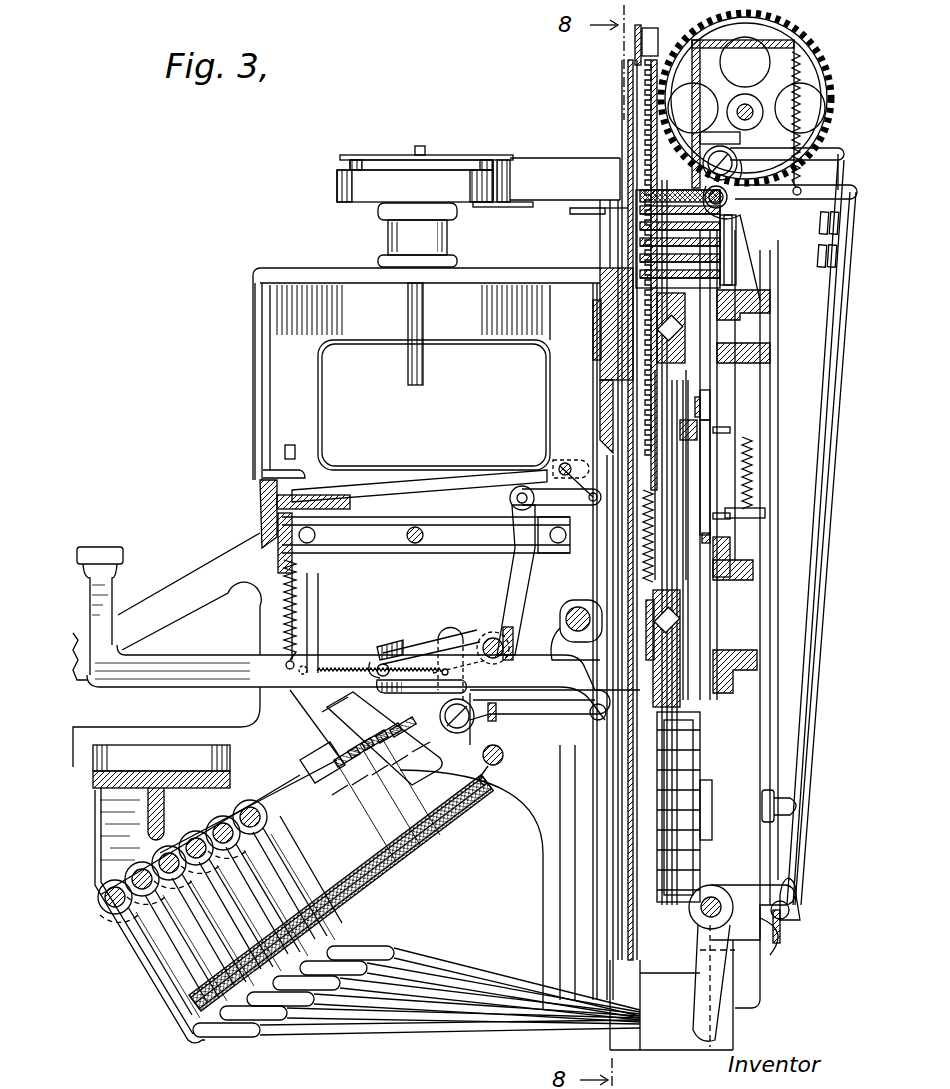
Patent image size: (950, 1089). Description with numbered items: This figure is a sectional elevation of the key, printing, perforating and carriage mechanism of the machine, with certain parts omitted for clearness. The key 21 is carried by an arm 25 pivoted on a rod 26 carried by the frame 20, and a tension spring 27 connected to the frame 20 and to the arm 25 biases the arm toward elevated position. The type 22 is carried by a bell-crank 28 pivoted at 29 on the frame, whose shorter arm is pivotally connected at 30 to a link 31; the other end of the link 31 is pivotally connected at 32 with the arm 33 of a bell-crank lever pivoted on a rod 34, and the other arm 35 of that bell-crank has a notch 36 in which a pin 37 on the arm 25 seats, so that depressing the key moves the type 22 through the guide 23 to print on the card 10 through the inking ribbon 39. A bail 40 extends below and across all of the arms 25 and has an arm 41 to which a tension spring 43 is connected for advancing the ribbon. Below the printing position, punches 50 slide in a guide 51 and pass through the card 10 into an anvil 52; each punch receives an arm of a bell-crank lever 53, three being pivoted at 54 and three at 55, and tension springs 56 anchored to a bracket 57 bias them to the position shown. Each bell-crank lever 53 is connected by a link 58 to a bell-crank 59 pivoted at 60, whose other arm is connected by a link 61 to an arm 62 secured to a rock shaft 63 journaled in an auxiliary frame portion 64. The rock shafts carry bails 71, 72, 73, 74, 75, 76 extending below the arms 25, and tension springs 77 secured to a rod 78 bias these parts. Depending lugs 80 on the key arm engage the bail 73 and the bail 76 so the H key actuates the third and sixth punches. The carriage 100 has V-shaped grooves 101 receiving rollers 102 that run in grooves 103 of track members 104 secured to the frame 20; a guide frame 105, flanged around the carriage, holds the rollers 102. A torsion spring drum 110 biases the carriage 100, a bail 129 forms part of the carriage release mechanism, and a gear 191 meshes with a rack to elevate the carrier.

The card 10 is at (632, 150).
The frame 20 is at (260, 368).
The key 21 is at (100, 552).
The type 22 is at (298, 452).
The guide 23 is at (568, 210).
The arm 25 is at (205, 660).
The rod 26 is at (578, 607).
The tension spring 27 is at (296, 652).
The bell-crank 28 is at (420, 480).
The pivot 29 is at (560, 464).
The pivotal connection 30 is at (592, 503).
The link 31 is at (532, 492).
The pivotal connection 32 is at (512, 497).
The arm 33 is at (512, 600).
The rod 34 is at (488, 638).
The arm 35 is at (418, 650).
The notch 36 is at (385, 664).
The pin 37 is at (378, 664).
The inking ribbon 39 is at (532, 162).
The bail 40 is at (498, 738).
The arm 41 is at (445, 630).
The tension spring 43 is at (312, 664).
The punch 50 is at (640, 258).
The guide 51 is at (690, 292).
The anvil 52 is at (640, 238).
The bell-crank lever 53 is at (834, 190).
The pivot 54 is at (724, 204).
The pivot 55 is at (736, 172).
The tension spring 56 is at (800, 85).
The bracket 57 is at (763, 50).
The link 58 is at (810, 490).
The bell-crank 59 is at (775, 950).
The pivot 60 is at (704, 915).
The link 61 is at (466, 990).
The arm 62 is at (290, 870).
The rock shaft 63 is at (228, 822).
The auxiliary frame portion 64 is at (228, 782).
The bail 71 is at (430, 722).
The bail 72 is at (418, 762).
The bail 73 is at (398, 772).
The bail 74 is at (378, 780).
The bail 75 is at (358, 790).
The bail 76 is at (338, 800).
The tension spring 77 is at (430, 838).
The rod 78 is at (495, 768).
The lug 80 is at (378, 738).
The carriage 100 is at (680, 570).
The groove 101 is at (645, 365).
The roller 102 is at (600, 340).
The groove 103 is at (690, 350).
The track member 104 is at (730, 315).
The guide frame 105 is at (660, 380).
The torsion spring drum 110 is at (660, 905).
The bail 129 is at (790, 925).
The gear 191 is at (832, 88).